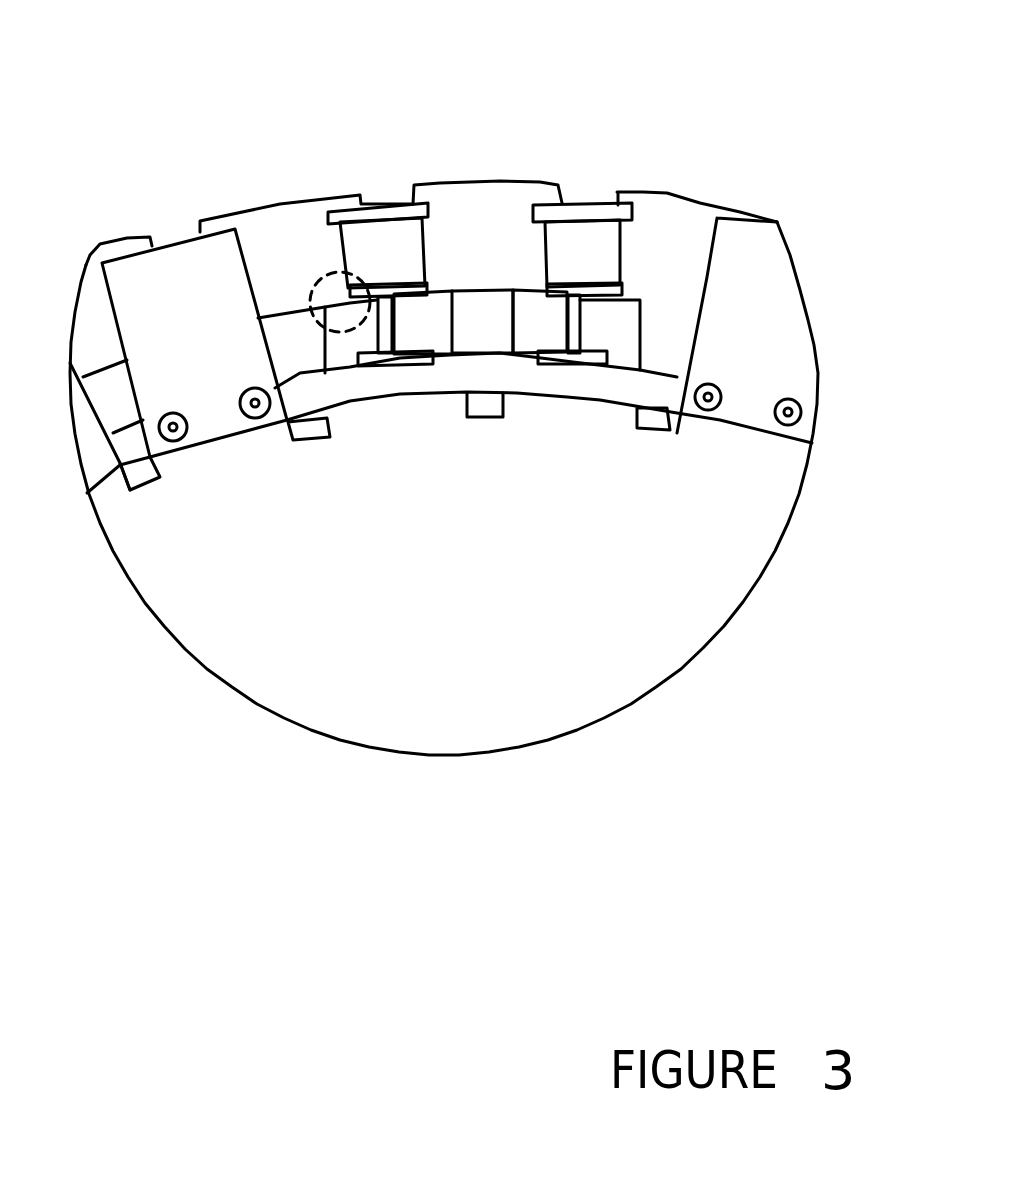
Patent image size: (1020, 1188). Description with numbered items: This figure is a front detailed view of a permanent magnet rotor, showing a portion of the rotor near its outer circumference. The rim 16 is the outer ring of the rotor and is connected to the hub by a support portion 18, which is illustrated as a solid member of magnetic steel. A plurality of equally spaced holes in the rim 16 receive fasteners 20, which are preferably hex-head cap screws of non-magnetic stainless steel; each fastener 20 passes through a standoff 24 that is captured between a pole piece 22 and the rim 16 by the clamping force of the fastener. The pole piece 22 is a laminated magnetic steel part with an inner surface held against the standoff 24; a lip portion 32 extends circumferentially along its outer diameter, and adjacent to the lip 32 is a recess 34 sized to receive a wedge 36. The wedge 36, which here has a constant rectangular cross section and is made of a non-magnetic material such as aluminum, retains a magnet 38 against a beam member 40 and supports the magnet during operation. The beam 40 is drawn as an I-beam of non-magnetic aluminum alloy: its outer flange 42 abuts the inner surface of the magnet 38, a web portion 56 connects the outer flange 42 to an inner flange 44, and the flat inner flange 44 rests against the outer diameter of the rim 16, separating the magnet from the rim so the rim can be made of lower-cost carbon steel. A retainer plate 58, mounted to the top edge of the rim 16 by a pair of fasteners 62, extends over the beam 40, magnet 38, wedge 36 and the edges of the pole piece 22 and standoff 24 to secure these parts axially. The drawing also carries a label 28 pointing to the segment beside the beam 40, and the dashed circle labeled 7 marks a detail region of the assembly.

The detail region (FIG. 7 view) 7 is at (315, 277).
The rim 16 is at (565, 395).
The support portion 18 is at (504, 668).
The fasteners 20 is at (667, 437).
The pole piece 22 is at (300, 200).
The standoff 24 is at (310, 367).
The lens segment 28 is at (433, 308).
The lip portion 32 is at (234, 214).
The recess 34 is at (633, 213).
The wedge 36 is at (403, 192).
The magnet 38 is at (403, 266).
The beam member 40 is at (593, 370).
The outer flange 42 is at (582, 313).
The inner flange 44 is at (530, 357).
The web portion 56 is at (580, 328).
The retainer plate 58 is at (163, 283).
The fasteners 62 is at (187, 428).